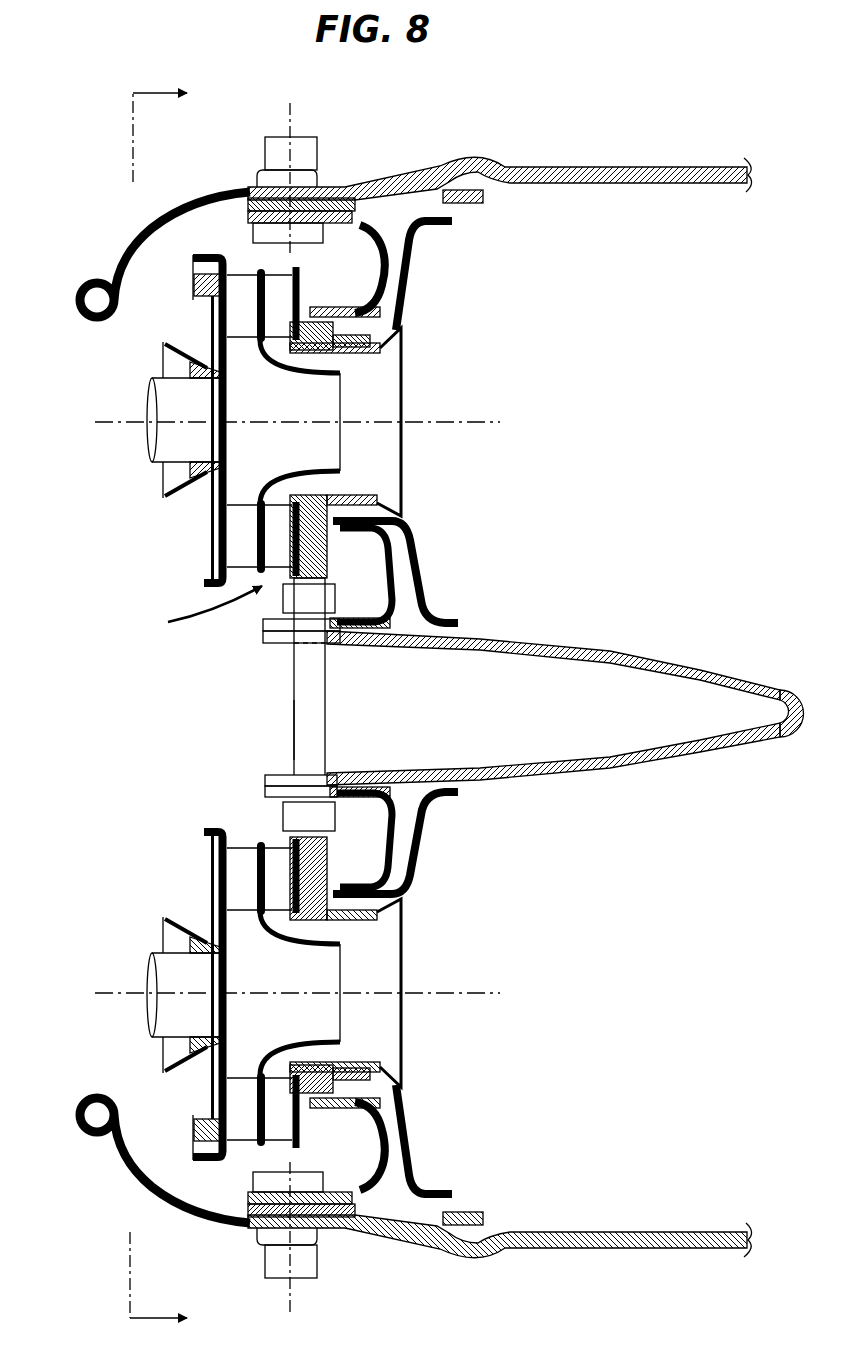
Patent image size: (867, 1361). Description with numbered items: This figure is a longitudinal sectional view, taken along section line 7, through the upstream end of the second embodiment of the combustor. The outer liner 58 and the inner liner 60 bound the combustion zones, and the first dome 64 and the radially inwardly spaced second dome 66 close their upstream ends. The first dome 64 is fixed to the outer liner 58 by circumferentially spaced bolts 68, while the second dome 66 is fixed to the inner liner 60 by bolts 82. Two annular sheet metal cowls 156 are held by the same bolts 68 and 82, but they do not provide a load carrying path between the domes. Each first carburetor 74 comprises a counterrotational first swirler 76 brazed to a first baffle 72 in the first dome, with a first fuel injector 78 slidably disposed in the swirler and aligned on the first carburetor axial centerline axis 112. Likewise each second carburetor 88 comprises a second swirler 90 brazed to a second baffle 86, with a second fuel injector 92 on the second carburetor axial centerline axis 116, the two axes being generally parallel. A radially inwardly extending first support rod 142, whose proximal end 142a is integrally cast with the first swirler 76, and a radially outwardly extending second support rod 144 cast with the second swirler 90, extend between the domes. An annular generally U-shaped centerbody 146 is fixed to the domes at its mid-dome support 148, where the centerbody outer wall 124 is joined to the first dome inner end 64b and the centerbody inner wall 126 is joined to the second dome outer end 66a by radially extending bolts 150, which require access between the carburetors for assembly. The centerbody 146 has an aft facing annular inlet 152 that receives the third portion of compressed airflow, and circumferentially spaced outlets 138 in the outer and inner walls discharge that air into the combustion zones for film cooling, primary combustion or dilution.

The section line 7- 7 is at (168, 707).
The outer liner 58 is at (406, 176).
The inner liner 60 is at (385, 1228).
The first dome 64 is at (393, 550).
The first dome inner end 64b is at (268, 628).
The second dome 66 is at (398, 831).
The second dome outer end 66a is at (265, 790).
The bolts 68 is at (317, 153).
The first baffle 72 is at (408, 277).
The first carburetor 74 is at (409, 351).
The first swirler 76 is at (168, 622).
The first fuel injector 78 is at (152, 452).
The bolts 82 is at (312, 1263).
The second baffle 86 is at (408, 1156).
The second carburetor 88 is at (409, 939).
The second swirler 90 is at (284, 834).
The second fuel injector 92 is at (152, 978).
The first carburetor axial centerline axis 112 is at (470, 416).
The second carburetor axial centerline axis 116 is at (472, 988).
The centerbody outer wall 124 is at (533, 657).
The centerbody inner wall 126 is at (603, 757).
The outlets 138 is at (572, 717).
The first support rod 142 is at (288, 695).
The first support rod proximal end 142a is at (307, 582).
The second support rod 144 is at (330, 725).
The centerbody 146 is at (782, 747).
The mid-dome support 148 is at (355, 614).
The bolts 150 is at (283, 600).
The aft facing annular inlet 152 is at (273, 746).
The cowls 156 is at (107, 240).